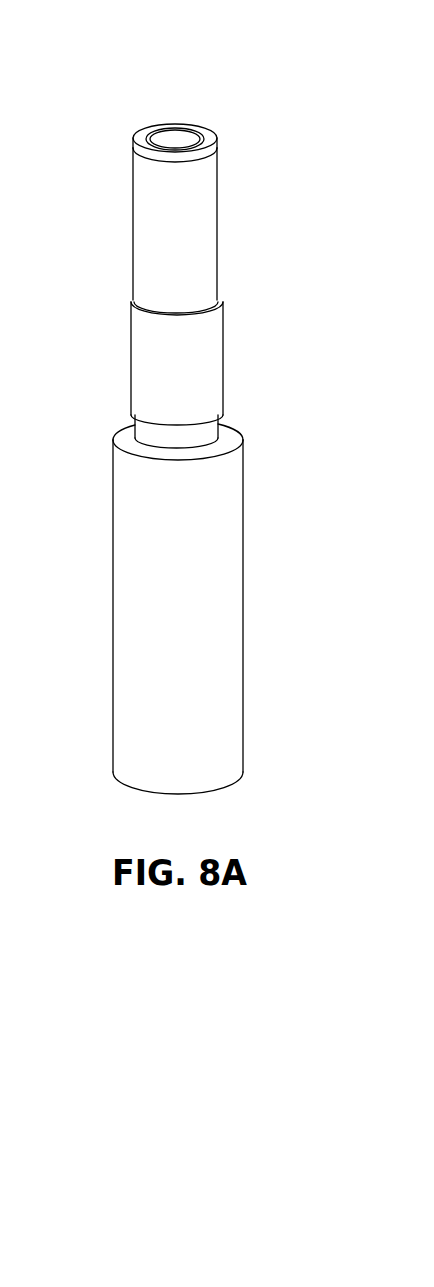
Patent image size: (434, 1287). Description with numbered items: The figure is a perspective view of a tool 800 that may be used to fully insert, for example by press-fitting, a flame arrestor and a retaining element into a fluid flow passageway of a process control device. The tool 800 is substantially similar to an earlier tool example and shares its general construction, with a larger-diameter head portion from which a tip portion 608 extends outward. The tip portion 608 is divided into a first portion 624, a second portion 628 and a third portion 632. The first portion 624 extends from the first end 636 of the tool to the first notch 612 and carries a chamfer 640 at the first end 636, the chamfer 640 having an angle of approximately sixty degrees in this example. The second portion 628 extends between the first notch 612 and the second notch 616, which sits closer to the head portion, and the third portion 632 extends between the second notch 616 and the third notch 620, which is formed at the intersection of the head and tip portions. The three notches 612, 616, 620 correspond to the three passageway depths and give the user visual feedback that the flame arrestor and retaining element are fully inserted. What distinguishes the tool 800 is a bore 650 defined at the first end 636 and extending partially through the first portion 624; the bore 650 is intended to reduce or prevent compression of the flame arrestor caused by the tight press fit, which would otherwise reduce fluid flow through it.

The tool 800 is at (325, 131).
The tip portion 608 is at (96, 318).
The first portion 624 is at (203, 214).
The chamfer 640 is at (214, 150).
The first end 636 is at (195, 132).
The bore 650 is at (162, 147).
The first notch 612 is at (219, 303).
The second portion 628 is at (204, 342).
The second notch 616 is at (222, 416).
The third portion 632 is at (202, 431).
The third notch 620 is at (226, 443).